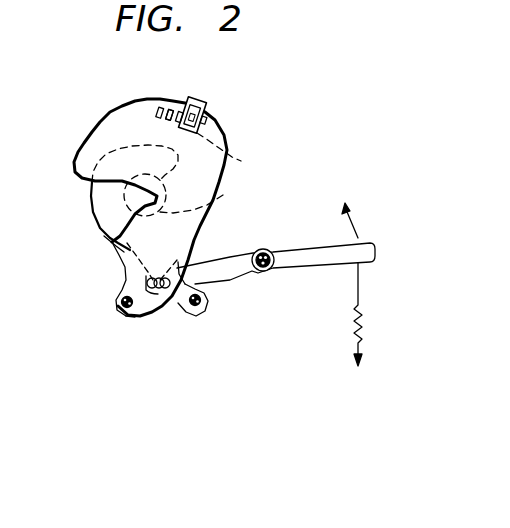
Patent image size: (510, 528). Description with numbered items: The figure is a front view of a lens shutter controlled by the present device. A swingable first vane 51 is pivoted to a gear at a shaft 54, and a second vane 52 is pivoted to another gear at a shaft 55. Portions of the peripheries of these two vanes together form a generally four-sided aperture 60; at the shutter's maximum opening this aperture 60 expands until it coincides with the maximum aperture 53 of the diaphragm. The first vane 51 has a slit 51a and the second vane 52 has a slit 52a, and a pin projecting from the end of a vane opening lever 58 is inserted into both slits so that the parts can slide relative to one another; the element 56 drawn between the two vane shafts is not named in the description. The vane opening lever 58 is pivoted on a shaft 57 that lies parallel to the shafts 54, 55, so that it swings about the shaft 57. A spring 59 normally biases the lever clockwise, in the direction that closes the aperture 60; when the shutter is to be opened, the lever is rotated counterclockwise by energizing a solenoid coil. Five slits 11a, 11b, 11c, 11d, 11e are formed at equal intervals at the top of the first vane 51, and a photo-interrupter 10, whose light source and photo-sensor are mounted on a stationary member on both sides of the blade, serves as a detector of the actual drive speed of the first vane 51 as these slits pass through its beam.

The photo-interrupter 10 is at (208, 107).
The slit 11a is at (153, 112).
The slit 11b is at (165, 108).
The slit 11c is at (185, 100).
The slit 11d is at (247, 156).
The slit 11e is at (205, 123).
The first vane 51 is at (103, 131).
The slit 51a is at (130, 268).
The second vane 52 is at (90, 202).
The slit 52a is at (192, 257).
The maximum aperture of diaphragm 53 is at (218, 209).
The shaft 54 is at (120, 318).
The shaft 55 is at (197, 317).
The coil spring 56 is at (152, 314).
The shaft 57 is at (267, 250).
The vane opening lever 58 is at (315, 269).
The spring 59 is at (363, 306).
The aperture 60 is at (105, 238).